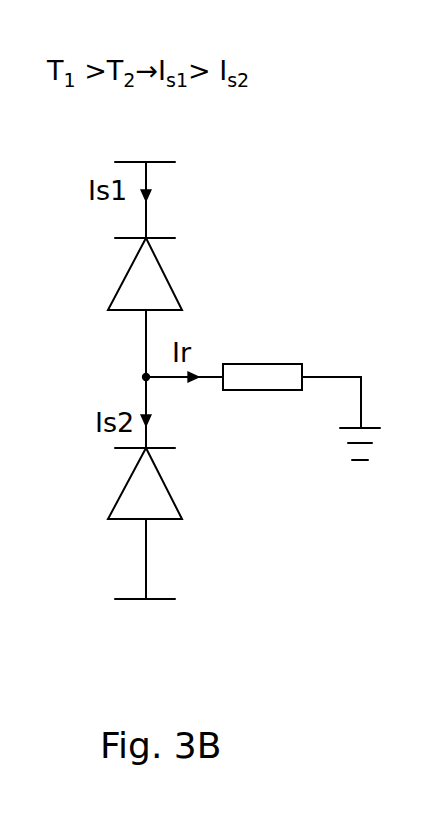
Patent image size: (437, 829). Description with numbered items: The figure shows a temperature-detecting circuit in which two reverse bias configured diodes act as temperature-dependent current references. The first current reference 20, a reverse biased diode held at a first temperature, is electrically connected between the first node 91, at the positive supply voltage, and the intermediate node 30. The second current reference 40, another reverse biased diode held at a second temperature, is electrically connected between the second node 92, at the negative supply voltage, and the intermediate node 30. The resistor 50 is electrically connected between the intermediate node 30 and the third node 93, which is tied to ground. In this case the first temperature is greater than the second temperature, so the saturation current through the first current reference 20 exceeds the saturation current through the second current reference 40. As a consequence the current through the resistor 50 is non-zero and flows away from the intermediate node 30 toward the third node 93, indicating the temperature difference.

The first node 91 is at (190, 160).
The first current reference 20 is at (188, 272).
The intermediate node 30 is at (140, 375).
The resistor 50 is at (310, 352).
The third node 93 is at (372, 427).
The second current reference 40 is at (190, 517).
The second node 92 is at (185, 615).